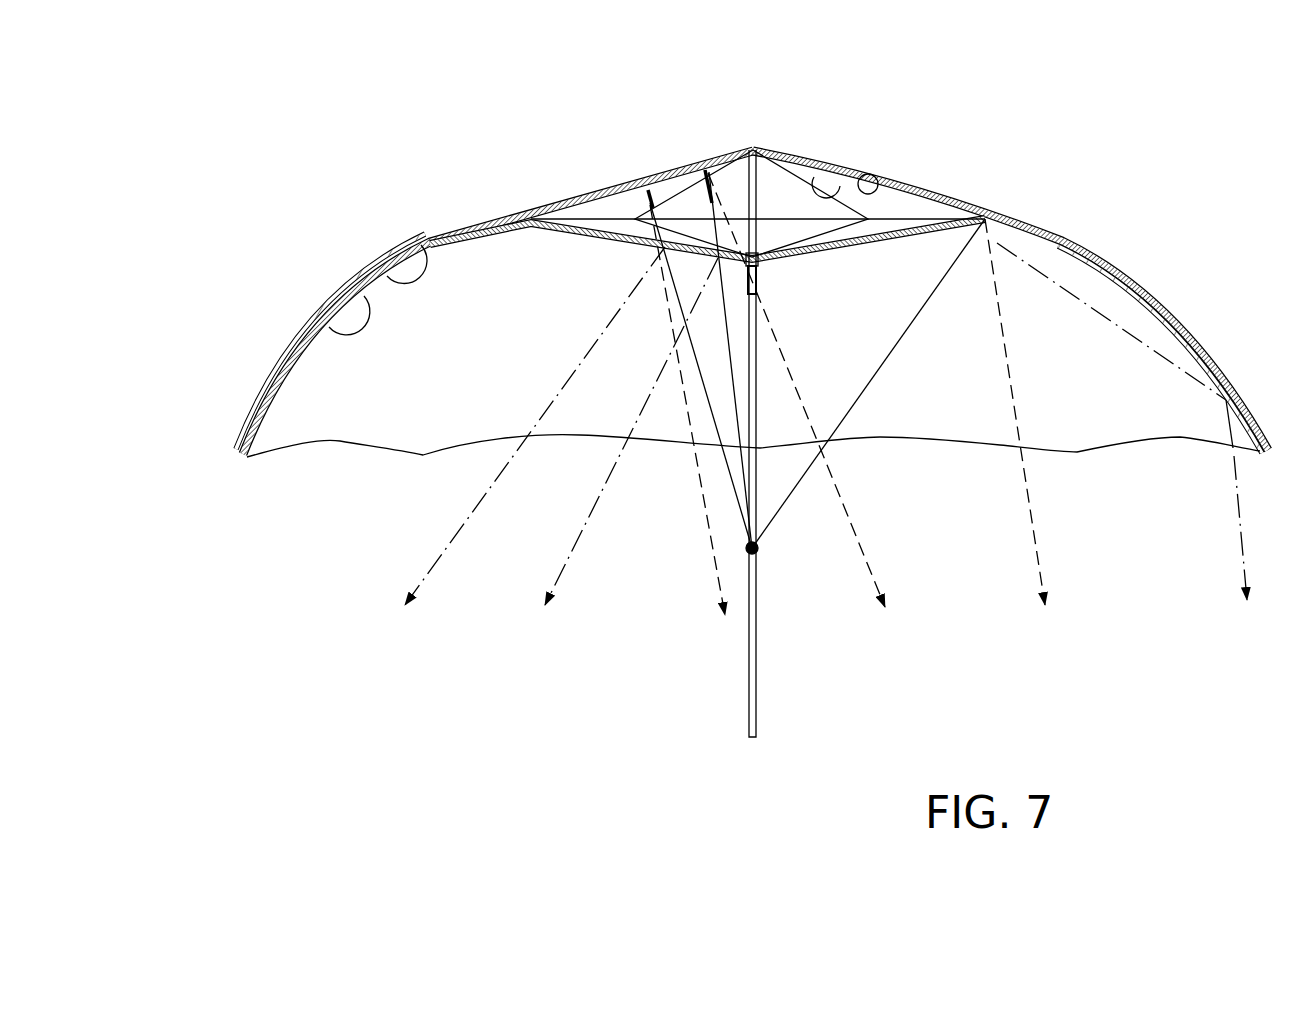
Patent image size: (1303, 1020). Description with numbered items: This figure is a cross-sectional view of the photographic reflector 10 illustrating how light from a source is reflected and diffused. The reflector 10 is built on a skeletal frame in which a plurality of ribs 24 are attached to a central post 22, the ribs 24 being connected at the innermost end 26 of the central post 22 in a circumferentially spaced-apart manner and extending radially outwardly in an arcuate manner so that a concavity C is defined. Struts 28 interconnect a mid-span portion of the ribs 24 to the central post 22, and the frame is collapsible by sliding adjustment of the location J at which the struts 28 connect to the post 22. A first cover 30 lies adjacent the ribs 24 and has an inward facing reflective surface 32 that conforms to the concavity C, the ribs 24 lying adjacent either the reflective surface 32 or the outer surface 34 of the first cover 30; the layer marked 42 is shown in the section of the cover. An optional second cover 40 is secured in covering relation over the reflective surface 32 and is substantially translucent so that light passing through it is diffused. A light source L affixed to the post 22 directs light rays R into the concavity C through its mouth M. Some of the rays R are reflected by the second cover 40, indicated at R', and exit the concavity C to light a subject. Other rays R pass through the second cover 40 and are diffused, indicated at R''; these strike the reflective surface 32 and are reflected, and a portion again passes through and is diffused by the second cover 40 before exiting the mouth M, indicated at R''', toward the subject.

The photographic reflector 10 is at (695, 416).
The central post 22 is at (758, 688).
The ribs 24 is at (825, 178).
The innermost end of the central post 26 is at (757, 148).
The struts 28 is at (583, 228).
The first cover 30 is at (252, 373).
The reflective surface 32 is at (422, 236).
The outer surface 34 is at (288, 333).
The second cover 40 is at (252, 402).
The outer cover layer 42 is at (318, 312).
The location at which the struts connect to the central post J is at (766, 268).
The source of light L is at (762, 548).
The mouth M is at (343, 448).
The concavity C is at (439, 419).
The light rays R is at (817, 360).
The reflected light R' is at (826, 424).
The diffused light rays R'' is at (649, 151).
The exiting diffused light R''' is at (851, 394).